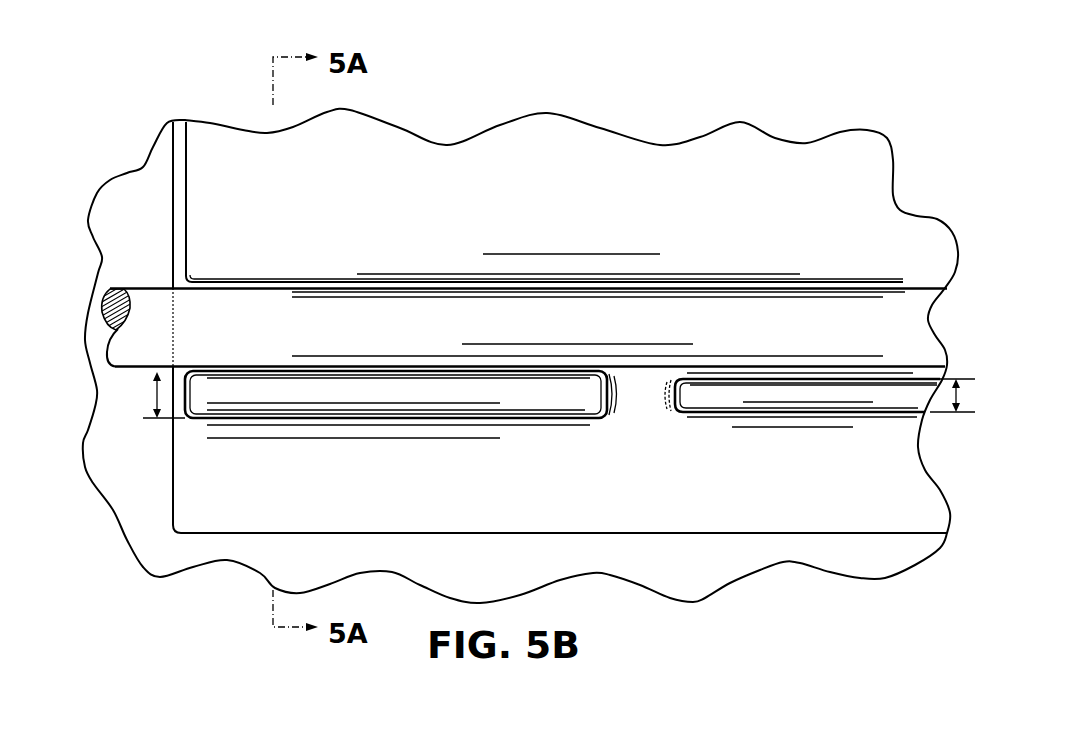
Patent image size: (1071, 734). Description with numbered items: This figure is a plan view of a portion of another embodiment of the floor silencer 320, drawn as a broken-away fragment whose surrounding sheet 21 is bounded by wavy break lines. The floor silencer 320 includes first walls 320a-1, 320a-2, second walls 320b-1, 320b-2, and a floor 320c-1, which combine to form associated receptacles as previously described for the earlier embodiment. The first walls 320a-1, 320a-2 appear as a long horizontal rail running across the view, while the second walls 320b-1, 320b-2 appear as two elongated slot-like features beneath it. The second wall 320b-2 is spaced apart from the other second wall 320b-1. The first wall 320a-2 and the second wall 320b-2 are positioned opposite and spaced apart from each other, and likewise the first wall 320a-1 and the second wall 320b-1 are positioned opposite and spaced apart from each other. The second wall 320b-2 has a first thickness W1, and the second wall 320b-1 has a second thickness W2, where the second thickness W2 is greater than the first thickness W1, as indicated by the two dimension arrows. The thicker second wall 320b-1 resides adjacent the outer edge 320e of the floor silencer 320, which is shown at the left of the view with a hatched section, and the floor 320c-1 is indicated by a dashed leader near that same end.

The plate 21 is at (898, 313).
The floor silencer 320 is at (168, 187).
The first wall 320a-1 is at (260, 288).
The first wall 320a-2 is at (845, 288).
The second wall 320b-1 is at (258, 413).
The second wall 320b-2 is at (767, 407).
The floor 320c-1 is at (198, 323).
The outer edge 320e is at (170, 346).
The first thickness W1 is at (957, 397).
The second thickness W2 is at (151, 395).